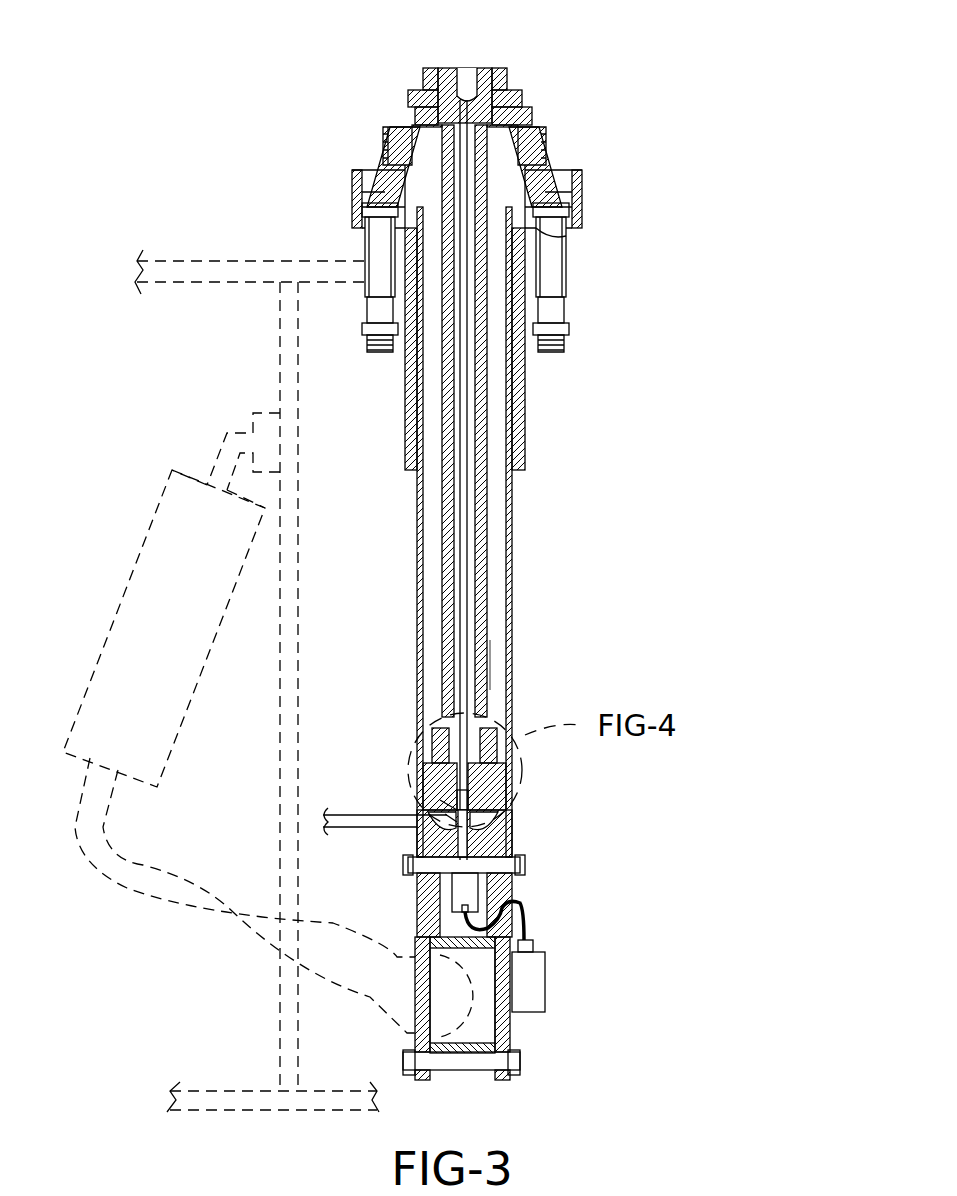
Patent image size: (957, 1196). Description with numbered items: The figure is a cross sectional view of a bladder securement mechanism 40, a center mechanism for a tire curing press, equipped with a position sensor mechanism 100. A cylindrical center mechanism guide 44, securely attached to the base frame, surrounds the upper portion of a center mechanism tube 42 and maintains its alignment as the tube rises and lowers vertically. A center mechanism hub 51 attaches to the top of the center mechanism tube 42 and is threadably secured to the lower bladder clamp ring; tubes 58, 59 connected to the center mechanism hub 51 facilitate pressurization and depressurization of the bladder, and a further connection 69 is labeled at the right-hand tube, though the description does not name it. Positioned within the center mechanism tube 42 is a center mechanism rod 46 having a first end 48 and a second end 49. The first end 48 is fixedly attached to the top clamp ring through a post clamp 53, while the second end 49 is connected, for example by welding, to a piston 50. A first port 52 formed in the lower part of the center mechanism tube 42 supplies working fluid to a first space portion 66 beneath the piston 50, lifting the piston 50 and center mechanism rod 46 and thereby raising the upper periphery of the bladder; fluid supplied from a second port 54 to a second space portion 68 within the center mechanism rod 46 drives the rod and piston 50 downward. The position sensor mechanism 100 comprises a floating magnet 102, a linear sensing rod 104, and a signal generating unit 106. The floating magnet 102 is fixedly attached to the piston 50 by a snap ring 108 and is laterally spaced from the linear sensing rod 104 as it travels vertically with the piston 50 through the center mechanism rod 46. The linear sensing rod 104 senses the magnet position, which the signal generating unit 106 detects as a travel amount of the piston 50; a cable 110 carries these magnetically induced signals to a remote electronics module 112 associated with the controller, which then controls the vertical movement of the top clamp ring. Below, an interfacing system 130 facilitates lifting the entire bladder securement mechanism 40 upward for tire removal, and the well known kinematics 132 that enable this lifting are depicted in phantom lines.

The bladder securement mechanism 40 is at (683, 336).
The center mechanism tube 42 is at (512, 498).
The center mechanism guide 44 is at (525, 400).
The center mechanism rod 46 is at (487, 560).
The first end 48 is at (440, 150).
The second end 49 is at (438, 763).
The piston 50 is at (490, 786).
The center mechanism hub 51 is at (535, 123).
The first port 52 is at (360, 822).
The post clamp 53 is at (452, 67).
The second port 54 is at (520, 870).
The tube 58 is at (569, 292).
The tube 59 is at (365, 238).
The first space portion 66 is at (490, 823).
The second space portion 68 is at (497, 665).
The port 69 is at (540, 244).
The position sensor mechanism 100 is at (570, 970).
The floating magnet 102 is at (457, 803).
The linear sensing rod 104 is at (463, 693).
The signal generating unit 106 is at (455, 893).
The snap ring 108 is at (432, 812).
The cable 110 is at (558, 932).
The remote electronics module 112 is at (557, 959).
The interfacing system 130 is at (512, 1035).
The kinematics 132 is at (132, 895).